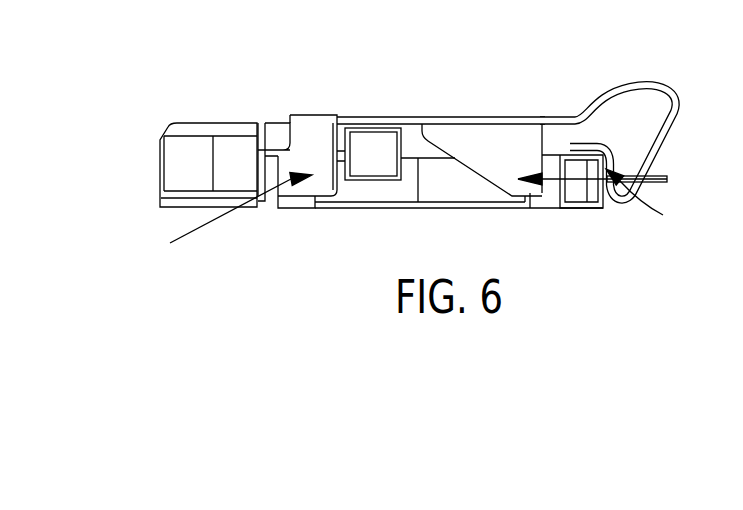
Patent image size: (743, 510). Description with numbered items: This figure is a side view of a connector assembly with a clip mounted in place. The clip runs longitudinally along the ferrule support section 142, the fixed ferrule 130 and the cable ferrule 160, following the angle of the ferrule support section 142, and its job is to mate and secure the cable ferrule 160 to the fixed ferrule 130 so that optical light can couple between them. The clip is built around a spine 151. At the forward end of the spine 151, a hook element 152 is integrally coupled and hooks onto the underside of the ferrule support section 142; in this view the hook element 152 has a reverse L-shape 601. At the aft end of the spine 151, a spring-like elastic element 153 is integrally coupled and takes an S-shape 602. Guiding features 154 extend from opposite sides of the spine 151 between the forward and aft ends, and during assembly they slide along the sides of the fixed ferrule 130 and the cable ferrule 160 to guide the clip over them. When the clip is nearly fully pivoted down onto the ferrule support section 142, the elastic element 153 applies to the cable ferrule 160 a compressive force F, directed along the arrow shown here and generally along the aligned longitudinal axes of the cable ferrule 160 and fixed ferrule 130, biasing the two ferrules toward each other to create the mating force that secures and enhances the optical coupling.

The fixed ferrule 130 is at (377, 185).
The ferrule support section 142 is at (270, 137).
The spine 151 is at (410, 122).
The hook element 152 is at (320, 132).
The elastic element 153 is at (652, 158).
The guiding features 154 is at (483, 137).
The cable ferrule 160 is at (458, 185).
The reverse L-shape 601 is at (222, 216).
The S-shape 602 is at (651, 200).
The compressive force F is at (575, 178).